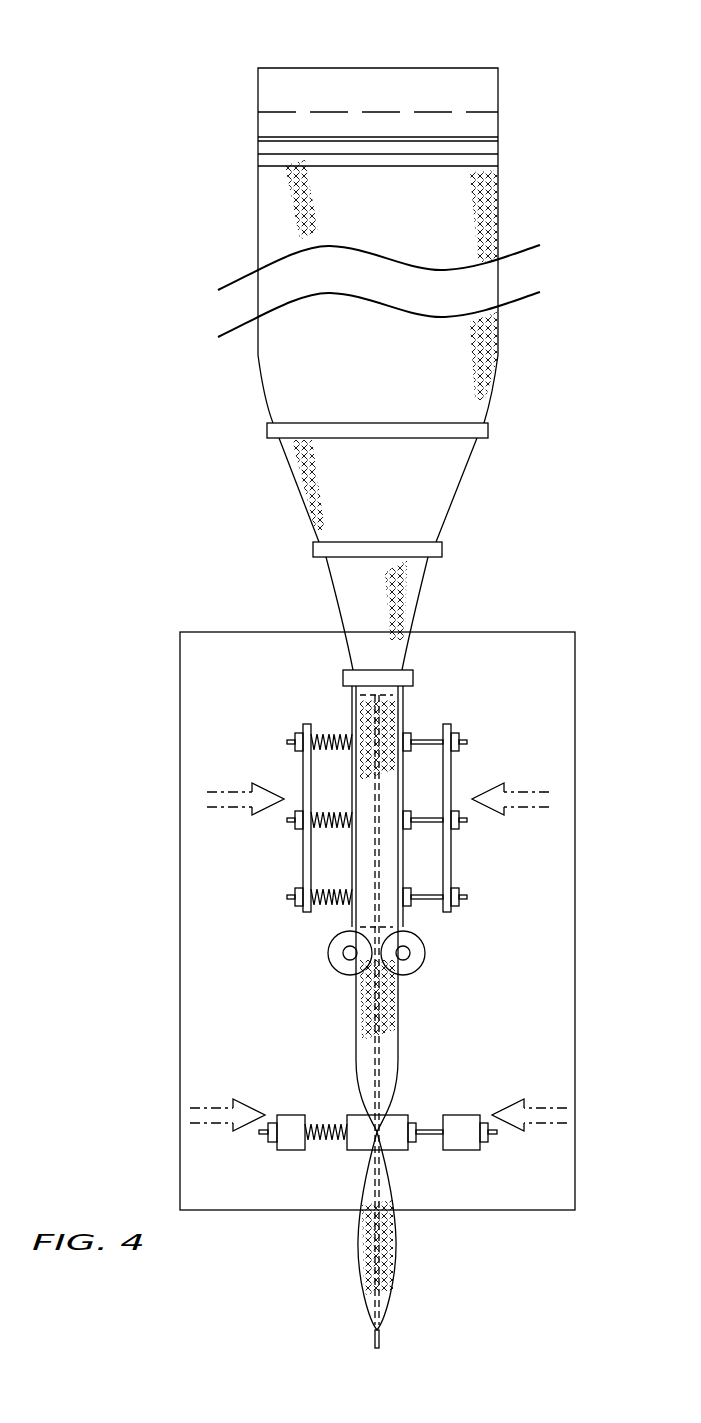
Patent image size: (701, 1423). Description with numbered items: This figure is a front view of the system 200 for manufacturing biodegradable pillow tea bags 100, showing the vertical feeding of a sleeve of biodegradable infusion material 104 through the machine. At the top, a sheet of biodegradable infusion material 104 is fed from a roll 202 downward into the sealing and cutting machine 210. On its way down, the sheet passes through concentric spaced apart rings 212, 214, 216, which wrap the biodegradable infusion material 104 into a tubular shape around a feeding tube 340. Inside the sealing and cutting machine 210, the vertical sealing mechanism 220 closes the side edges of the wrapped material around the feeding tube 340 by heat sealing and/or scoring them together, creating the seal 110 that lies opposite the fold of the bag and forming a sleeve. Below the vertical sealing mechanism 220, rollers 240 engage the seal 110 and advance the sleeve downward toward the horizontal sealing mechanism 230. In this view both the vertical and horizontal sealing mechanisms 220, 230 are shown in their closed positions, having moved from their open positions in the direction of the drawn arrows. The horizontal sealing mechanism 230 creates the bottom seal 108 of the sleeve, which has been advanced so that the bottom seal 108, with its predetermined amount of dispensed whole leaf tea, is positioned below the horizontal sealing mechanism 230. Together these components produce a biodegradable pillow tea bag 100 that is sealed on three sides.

The system 200 is at (329, 651).
The roll 202 is at (405, 68).
The biodegradable infusion material 104 is at (498, 197).
The concentric spaced apart ring 212 is at (443, 423).
The concentric spaced apart ring 214 is at (412, 542).
The sealing and cutting machine 210 is at (497, 612).
The concentric spaced apart ring 216 is at (343, 678).
The feeding tube 340 is at (390, 705).
The vertical sealing mechanism 220 is at (303, 860).
The rollers 240 is at (330, 964).
The seal 110 is at (380, 1055).
The horizontal sealing mechanism 230 is at (465, 1113).
The biodegradable pillow tea bag 100 is at (395, 1258).
The bottom seal 108 is at (376, 1348).